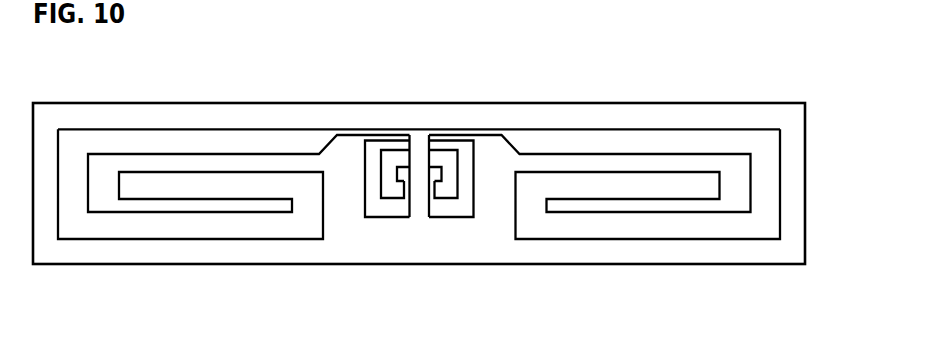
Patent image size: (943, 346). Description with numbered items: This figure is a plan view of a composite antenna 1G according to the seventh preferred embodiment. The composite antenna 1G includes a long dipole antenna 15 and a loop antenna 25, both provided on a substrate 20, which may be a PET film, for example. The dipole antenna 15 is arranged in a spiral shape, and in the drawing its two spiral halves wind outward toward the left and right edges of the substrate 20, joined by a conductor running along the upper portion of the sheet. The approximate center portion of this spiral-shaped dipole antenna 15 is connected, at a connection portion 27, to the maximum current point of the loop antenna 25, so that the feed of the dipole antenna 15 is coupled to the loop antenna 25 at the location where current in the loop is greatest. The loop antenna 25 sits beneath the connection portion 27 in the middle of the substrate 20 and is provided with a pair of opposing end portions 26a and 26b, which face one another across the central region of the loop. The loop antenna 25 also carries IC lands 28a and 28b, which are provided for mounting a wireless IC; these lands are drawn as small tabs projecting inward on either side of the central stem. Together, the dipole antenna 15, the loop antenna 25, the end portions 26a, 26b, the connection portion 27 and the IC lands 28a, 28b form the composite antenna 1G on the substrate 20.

The composite antenna 1G is at (149, 71).
The dipole antenna 15 is at (588, 140).
The substrate 20 is at (693, 103).
The loop antenna 25 is at (364, 198).
The end portion 26a is at (400, 208).
The end portion 26b is at (438, 208).
The connection portion 27 is at (418, 136).
The IC land 28a is at (397, 167).
The IC land 28b is at (442, 167).